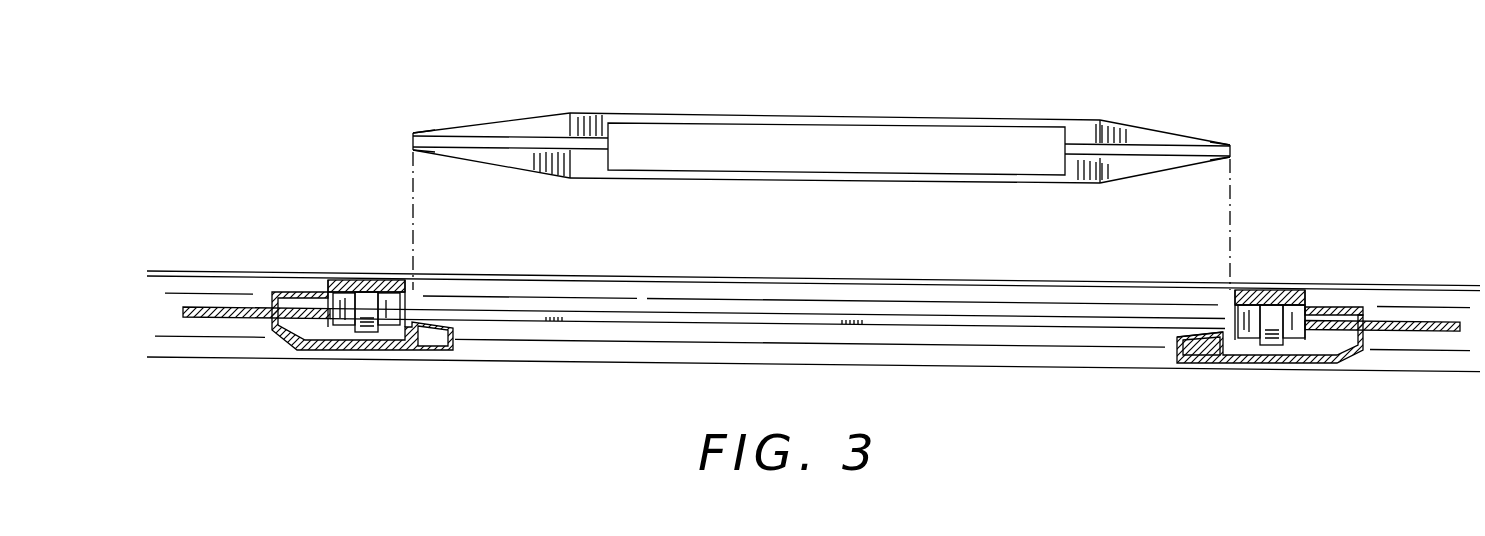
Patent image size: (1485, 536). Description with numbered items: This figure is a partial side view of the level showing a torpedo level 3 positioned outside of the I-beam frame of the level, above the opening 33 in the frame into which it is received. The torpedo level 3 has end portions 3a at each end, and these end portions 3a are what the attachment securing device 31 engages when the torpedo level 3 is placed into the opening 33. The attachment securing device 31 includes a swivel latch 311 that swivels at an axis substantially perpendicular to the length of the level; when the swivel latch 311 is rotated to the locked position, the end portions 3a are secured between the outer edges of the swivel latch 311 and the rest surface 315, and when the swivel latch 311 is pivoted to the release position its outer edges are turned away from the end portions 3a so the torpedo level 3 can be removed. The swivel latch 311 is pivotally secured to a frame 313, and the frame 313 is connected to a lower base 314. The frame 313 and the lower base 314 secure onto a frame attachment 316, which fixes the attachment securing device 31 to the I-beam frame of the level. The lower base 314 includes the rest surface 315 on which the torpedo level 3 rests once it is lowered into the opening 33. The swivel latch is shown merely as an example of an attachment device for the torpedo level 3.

The torpedo level 3 is at (980, 117).
The end portions 3a is at (442, 125).
The attachment securing device 31 is at (1271, 322).
The swivel latch 311 is at (1265, 290).
The frame 313 is at (1340, 305).
The lower base 314 is at (1228, 363).
The rest surface 315 is at (1173, 336).
The frame attachment 316 is at (1417, 333).
The opening 33 is at (550, 293).